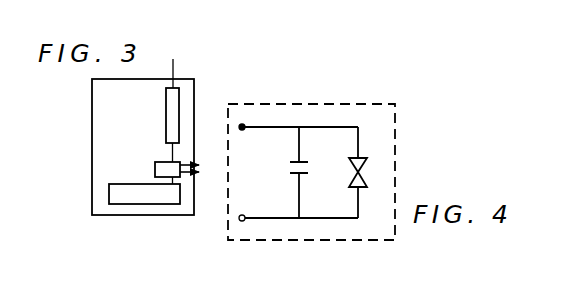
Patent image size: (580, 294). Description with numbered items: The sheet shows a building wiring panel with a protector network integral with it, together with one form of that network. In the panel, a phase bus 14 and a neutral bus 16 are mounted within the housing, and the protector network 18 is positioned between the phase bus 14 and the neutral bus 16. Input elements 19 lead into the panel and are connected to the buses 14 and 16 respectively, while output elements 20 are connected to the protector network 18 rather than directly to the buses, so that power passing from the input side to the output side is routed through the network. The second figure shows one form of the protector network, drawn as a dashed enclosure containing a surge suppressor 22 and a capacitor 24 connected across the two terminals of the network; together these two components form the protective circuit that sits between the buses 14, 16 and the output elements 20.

In FIG. 3, the phase bus 14 is at (180, 103).
In FIG. 3, the neutral bus 16 is at (148, 197).
In FIG. 3, the protector network 18 is at (156, 162).
In FIG. 3, the input element 19 is at (173, 74).
In FIG. 3, the output element 20 is at (192, 170).
In FIG. 4, the surge suppressor 22 is at (363, 172).
In FIG. 4, the capacitor 24 is at (290, 175).